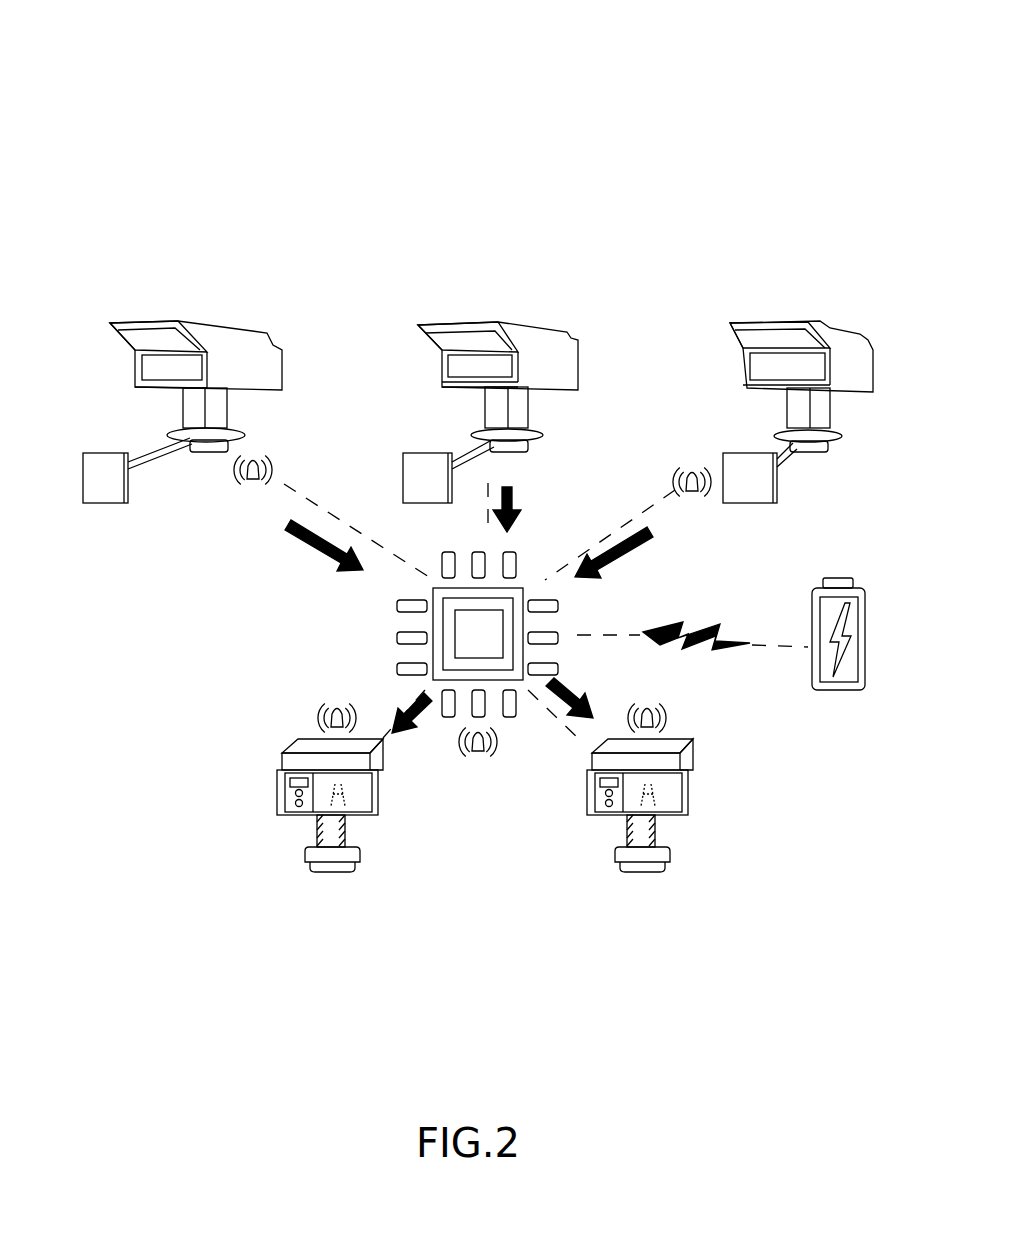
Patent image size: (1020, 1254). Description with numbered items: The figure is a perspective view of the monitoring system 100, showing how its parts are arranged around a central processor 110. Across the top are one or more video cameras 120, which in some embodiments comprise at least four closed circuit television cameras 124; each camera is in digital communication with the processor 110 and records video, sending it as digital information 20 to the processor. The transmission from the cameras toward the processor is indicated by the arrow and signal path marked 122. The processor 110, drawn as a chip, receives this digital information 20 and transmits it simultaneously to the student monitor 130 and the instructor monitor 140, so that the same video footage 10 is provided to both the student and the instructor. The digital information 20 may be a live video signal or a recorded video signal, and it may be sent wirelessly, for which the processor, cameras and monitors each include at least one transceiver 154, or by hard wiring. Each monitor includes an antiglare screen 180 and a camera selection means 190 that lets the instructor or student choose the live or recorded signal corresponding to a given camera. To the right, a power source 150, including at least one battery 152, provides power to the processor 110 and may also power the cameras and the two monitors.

The monitoring system 100 is at (560, 90).
The video cameras 120 is at (446, 366).
The closed circuit television cameras 124 is at (417, 365).
The camera signal 122 is at (343, 536).
The processor 110 is at (397, 636).
The digital information 20 is at (412, 723).
The transceiver 154 is at (472, 755).
The video footage 10 is at (303, 807).
The camera selection means 190 is at (282, 783).
The student monitor 130 is at (312, 815).
The antiglare screens 180 is at (701, 834).
The instructor monitor 140 is at (668, 817).
The power source 150 is at (687, 657).
The battery 152 is at (830, 690).